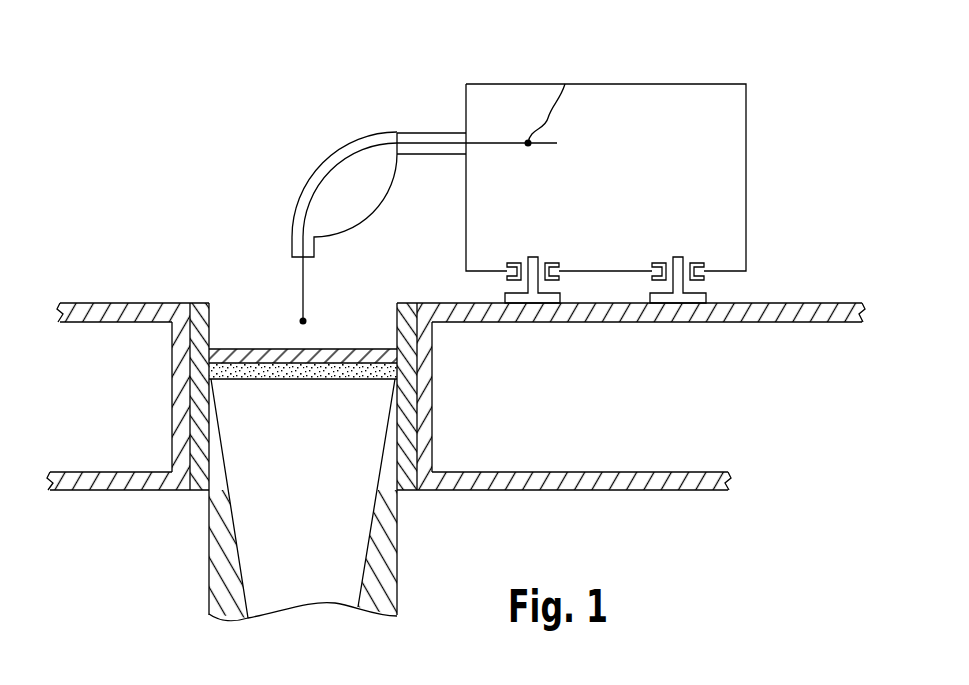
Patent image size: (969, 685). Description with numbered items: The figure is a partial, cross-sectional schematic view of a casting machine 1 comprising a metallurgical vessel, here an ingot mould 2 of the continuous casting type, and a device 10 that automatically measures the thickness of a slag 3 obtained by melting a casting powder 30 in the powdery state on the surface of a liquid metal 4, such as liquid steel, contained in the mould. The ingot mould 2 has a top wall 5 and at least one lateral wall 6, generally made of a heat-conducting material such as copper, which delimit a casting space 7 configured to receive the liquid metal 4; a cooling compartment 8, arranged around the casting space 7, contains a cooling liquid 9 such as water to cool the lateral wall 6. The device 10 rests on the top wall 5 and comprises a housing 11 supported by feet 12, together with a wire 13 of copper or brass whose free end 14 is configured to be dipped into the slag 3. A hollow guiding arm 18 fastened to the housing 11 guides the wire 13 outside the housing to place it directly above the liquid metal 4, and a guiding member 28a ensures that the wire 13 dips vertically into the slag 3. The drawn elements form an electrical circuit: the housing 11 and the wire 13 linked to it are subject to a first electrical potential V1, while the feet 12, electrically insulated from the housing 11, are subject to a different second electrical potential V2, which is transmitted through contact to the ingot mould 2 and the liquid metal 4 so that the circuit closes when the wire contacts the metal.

The casting machine 1 is at (337, 205).
The ingot mould 2 is at (447, 312).
The slag 3 is at (393, 371).
The liquid metal 4 is at (299, 463).
The top wall 5 is at (115, 303).
The lateral wall 6 is at (202, 440).
The casting space 7 is at (292, 575).
The cooling compartment 8 is at (468, 446).
The cooling liquid 9 is at (373, 412).
The device 10 is at (676, 80).
The housing 11 is at (593, 84).
The feet 12 is at (548, 300).
The wire 13 is at (302, 280).
The free end 14 is at (300, 321).
The guiding arm 18 is at (428, 132).
The guiding member 28a is at (303, 190).
The casting powder 30 is at (212, 355).
The first electrical potential V1 is at (708, 84).
The second electrical potential V2 is at (677, 258).